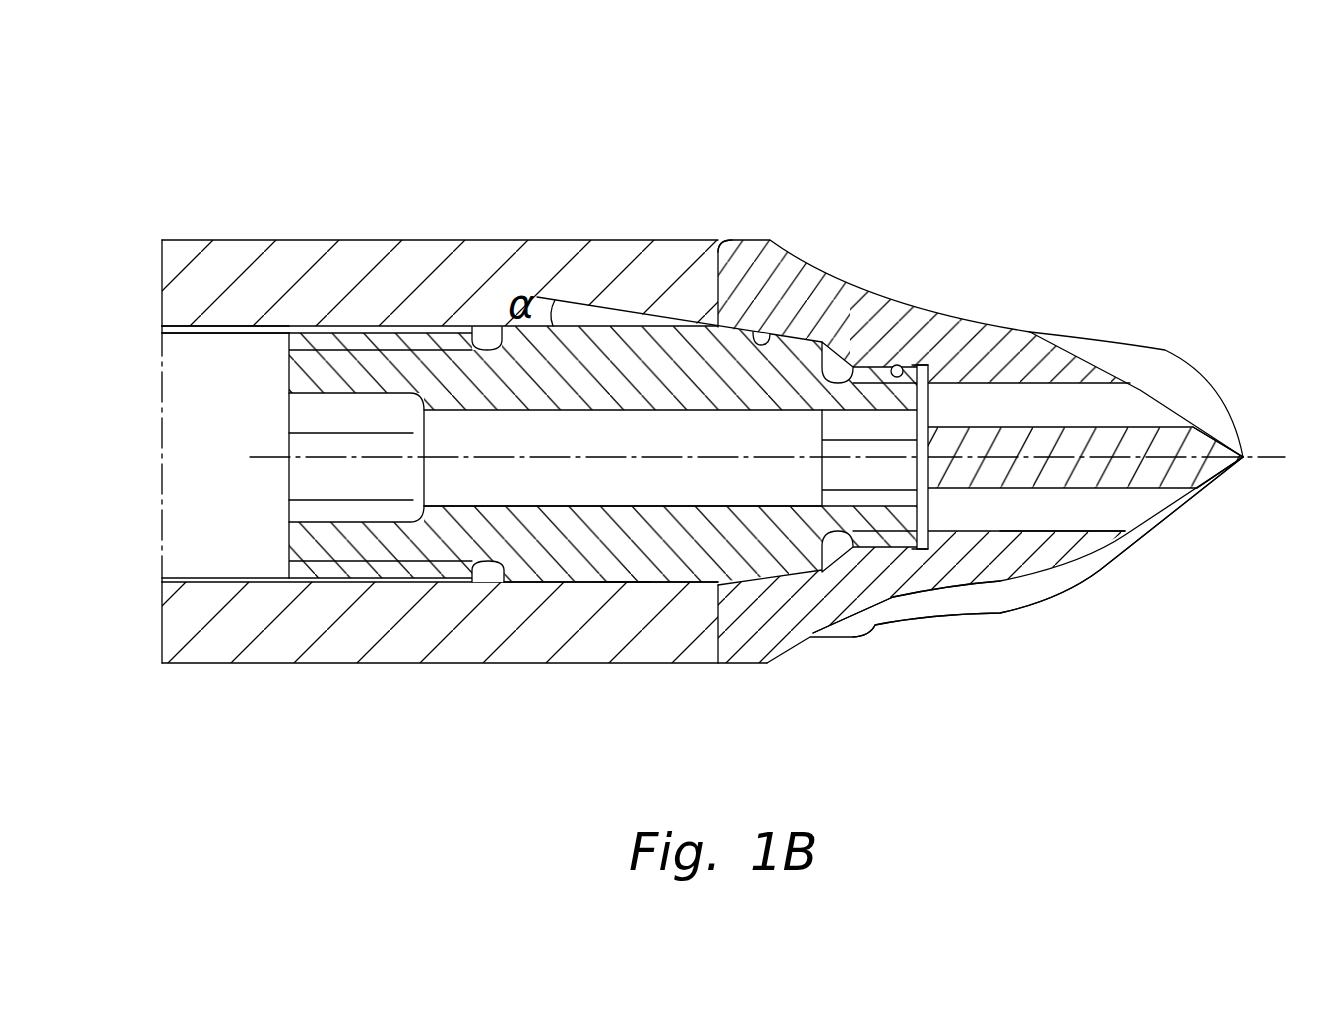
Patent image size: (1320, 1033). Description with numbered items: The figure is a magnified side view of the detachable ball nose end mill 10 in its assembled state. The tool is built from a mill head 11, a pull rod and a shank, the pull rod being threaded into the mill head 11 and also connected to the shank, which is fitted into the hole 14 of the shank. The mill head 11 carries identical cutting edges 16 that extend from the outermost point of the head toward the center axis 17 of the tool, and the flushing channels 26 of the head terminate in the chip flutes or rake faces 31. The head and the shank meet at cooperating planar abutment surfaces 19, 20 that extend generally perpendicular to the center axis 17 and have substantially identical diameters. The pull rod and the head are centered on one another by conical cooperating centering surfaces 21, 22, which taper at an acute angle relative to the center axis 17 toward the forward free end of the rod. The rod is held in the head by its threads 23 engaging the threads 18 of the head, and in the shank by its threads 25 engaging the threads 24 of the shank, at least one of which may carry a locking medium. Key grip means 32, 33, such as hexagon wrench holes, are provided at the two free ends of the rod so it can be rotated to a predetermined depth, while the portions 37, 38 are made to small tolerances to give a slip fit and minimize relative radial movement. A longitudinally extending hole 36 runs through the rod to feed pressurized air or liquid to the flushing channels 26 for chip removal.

The detachable ball nose end mill 10 is at (833, 147).
The mill head 11 is at (933, 630).
The hole 14 is at (223, 557).
The cutting edge 16 is at (1207, 372).
The center axis 17 is at (1278, 457).
The threads 18 is at (915, 363).
The abutment surface 19 is at (716, 246).
The abutment surface 20 is at (722, 278).
The centering surface 21 is at (825, 345).
The centering surface 22 is at (760, 333).
The threads 23 is at (888, 365).
The threads 24 is at (213, 336).
The threads 25 is at (355, 332).
The flushing channels 26 is at (1082, 518).
The chip flutes or rake faces 31 is at (1137, 357).
The key grip means 32 is at (855, 413).
The key grip means 33 is at (298, 479).
The longitudinally extending hole 36 is at (530, 506).
The portion 37 is at (600, 588).
The portion 38 is at (668, 582).